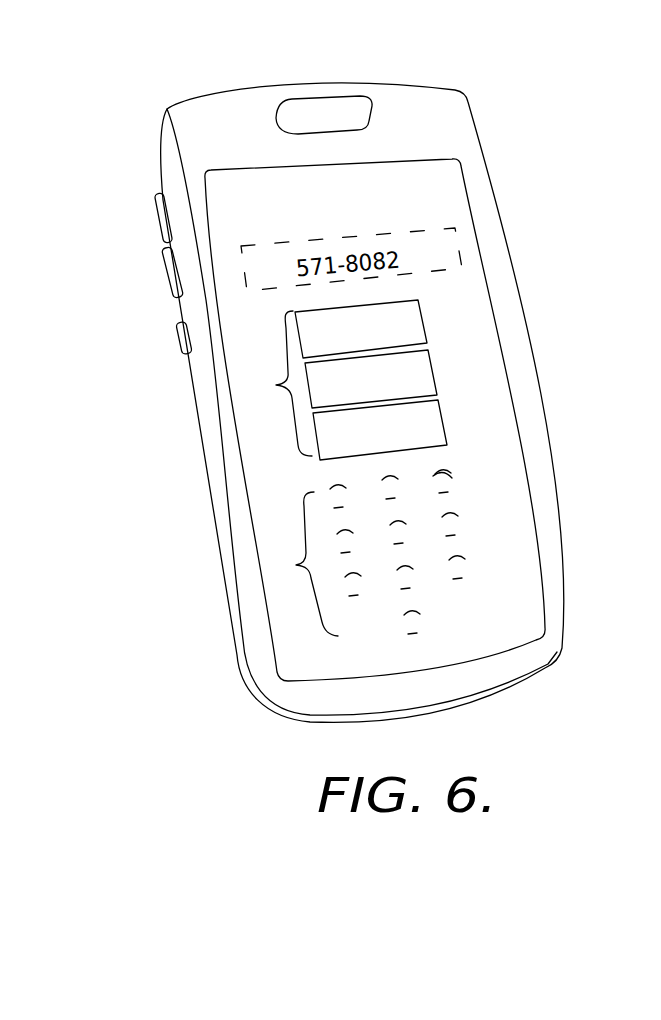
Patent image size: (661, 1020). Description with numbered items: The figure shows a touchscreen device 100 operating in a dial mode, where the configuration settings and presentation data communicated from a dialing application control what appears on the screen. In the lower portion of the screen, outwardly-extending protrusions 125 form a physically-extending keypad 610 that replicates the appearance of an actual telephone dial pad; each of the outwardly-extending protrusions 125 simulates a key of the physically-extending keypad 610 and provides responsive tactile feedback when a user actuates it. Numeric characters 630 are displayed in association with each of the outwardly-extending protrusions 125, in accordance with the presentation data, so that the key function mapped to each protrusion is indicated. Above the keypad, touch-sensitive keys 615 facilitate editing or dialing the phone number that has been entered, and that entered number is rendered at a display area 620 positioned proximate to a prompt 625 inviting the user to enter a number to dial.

The touchscreen device 100 is at (128, 131).
The display area 620 is at (490, 258).
The prompt 625 is at (440, 200).
The touch-sensitive keys 615 is at (276, 385).
The physically-extending keypad 610 is at (296, 565).
The outwardly-extending protrusions 125 is at (447, 478).
The numeric characters 630 is at (447, 478).